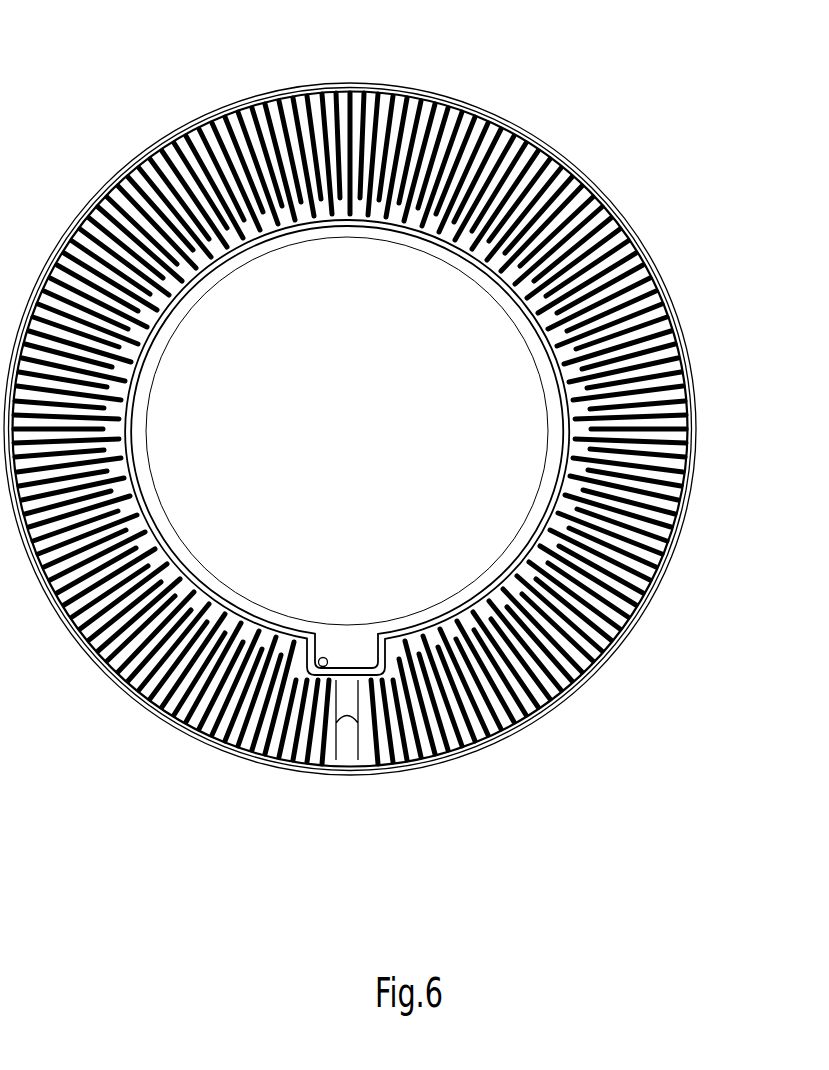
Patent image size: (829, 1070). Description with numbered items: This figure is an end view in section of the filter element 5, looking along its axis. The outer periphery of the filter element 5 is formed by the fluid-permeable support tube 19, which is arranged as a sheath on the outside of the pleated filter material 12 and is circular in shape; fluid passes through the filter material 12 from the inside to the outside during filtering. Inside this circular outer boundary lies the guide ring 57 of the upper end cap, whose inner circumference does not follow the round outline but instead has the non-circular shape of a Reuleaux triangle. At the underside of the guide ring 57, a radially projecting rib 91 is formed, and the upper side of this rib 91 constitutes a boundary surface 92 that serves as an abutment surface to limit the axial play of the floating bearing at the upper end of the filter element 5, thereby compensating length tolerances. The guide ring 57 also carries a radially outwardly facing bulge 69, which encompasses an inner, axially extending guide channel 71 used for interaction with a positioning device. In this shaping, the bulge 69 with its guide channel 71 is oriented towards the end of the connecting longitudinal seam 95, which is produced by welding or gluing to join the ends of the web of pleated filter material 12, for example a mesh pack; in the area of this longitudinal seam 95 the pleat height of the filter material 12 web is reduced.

The filter element 5 is at (110, 164).
The filter material 12 is at (527, 648).
The support tube 19 is at (615, 648).
The guide ring 57 is at (496, 565).
The bulge 69 is at (412, 765).
The guide channel 71 is at (272, 753).
The rib 91 is at (153, 447).
The boundary surface 92 is at (200, 548).
The longitudinal seam 95 is at (350, 730).